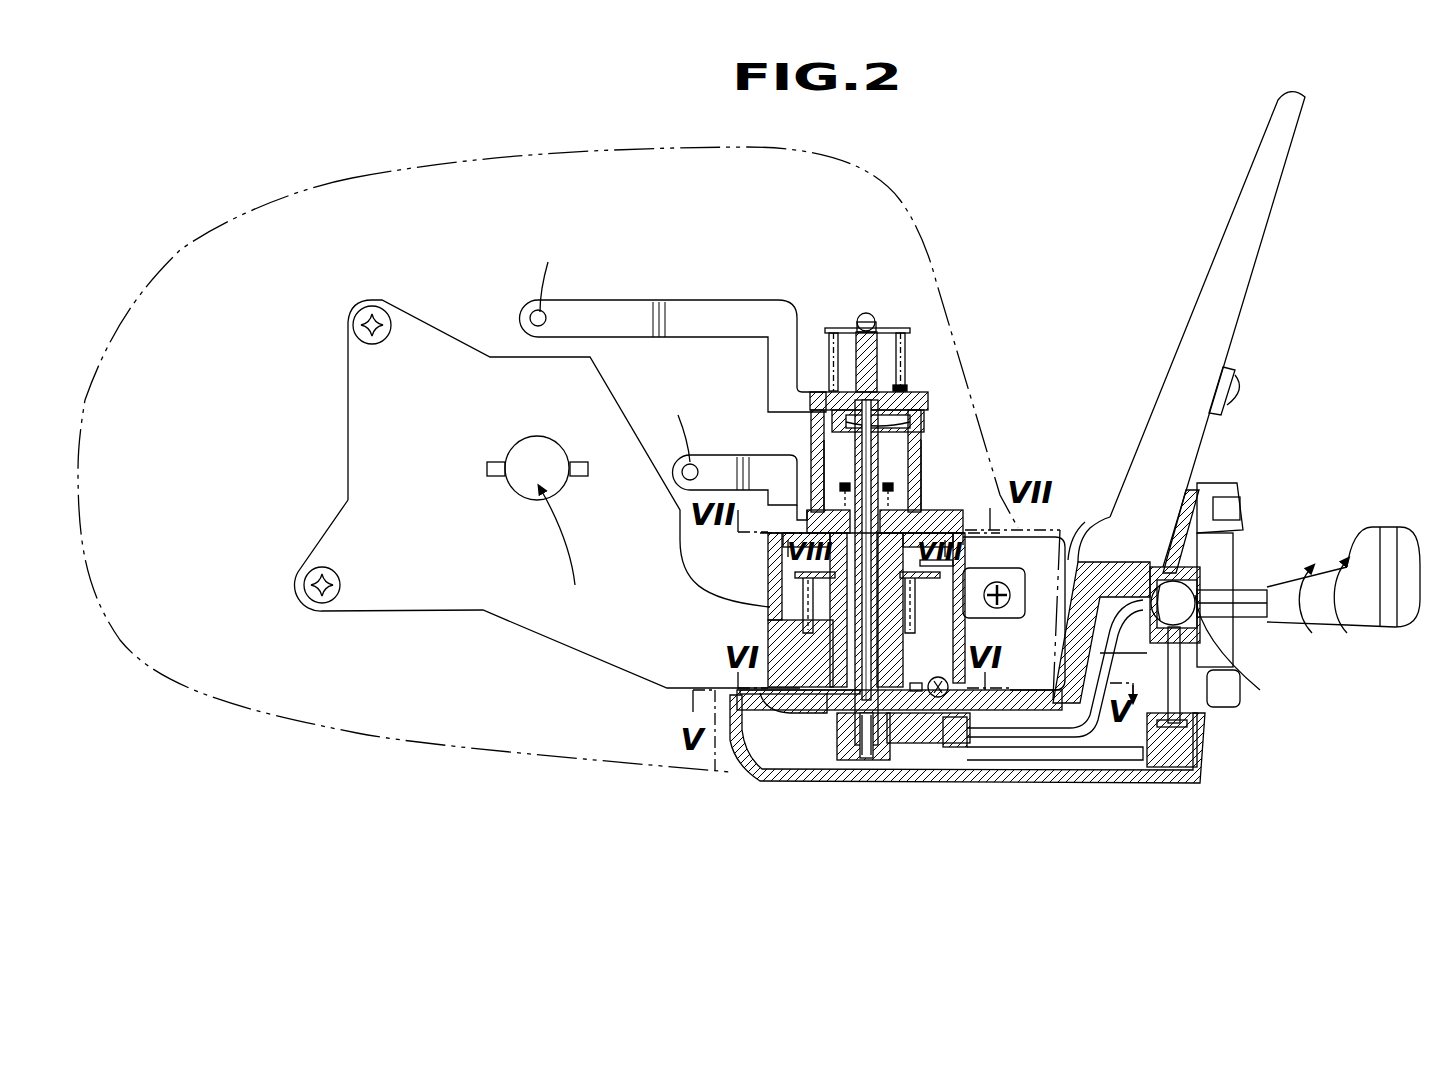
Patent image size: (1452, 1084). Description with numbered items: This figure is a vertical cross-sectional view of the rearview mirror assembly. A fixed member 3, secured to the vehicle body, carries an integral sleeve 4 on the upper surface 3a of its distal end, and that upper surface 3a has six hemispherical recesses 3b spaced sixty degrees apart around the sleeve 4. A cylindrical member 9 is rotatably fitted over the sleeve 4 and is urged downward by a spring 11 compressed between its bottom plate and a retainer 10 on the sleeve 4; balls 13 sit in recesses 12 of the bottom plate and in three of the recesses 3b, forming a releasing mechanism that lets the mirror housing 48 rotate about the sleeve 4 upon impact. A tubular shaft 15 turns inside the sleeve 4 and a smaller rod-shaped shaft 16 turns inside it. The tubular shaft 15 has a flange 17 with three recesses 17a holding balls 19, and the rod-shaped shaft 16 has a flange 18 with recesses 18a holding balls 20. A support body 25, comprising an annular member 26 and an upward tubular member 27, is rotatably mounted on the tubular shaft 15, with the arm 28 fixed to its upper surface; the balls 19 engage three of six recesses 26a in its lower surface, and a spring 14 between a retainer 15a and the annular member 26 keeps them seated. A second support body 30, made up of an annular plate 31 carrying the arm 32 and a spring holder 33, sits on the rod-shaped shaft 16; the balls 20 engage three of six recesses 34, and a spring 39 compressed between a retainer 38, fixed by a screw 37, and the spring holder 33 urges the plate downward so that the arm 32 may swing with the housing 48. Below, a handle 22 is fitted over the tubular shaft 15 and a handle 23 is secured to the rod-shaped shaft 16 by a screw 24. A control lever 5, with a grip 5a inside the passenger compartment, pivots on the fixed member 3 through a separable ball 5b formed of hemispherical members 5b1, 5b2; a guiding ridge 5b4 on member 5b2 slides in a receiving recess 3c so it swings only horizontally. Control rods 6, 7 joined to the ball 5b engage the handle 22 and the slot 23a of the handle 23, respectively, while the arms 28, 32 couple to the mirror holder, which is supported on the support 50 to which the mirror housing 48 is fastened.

The mirror housing 48 is at (400, 175).
The support 50 is at (435, 325).
The arm 32 is at (712, 300).
The arm 28 is at (730, 455).
The retainer 38 is at (830, 328).
The screw 37 is at (868, 313).
The recesses 34 is at (878, 380).
The annular plate 31 is at (830, 385).
The spring 39 is at (905, 360).
The spring holder 33 is at (907, 388).
The support body 30 is at (940, 394).
The balls 20 is at (900, 412).
The flange 18 is at (921, 450).
The recesses 18a is at (921, 428).
The tubular member 27 is at (921, 468).
The support body 25 is at (921, 488).
The annular member 26 is at (963, 520).
The recesses 26a is at (950, 540).
The cylindrical member 9 is at (1062, 561).
The spring 14 is at (866, 572).
The balls 19 is at (868, 510).
The retainer 15a is at (810, 500).
The flange 17 is at (840, 520).
The recesses 17a is at (795, 575).
The rod-shaped shaft 16 is at (768, 598).
The sleeve 4 is at (768, 630).
The tubular shaft 15 is at (768, 645).
The retainer 10 is at (1012, 585).
The spring 11 is at (953, 605).
The recesses 12 is at (940, 677).
The balls 13 is at (950, 688).
The fixed member 3 is at (1078, 560).
The receiving recess 3c is at (1078, 555).
The recesses 3b is at (812, 713).
The upper surface 3a is at (940, 760).
The screw 24 is at (862, 762).
The handle 22 is at (915, 745).
The handle 23 is at (1118, 762).
The slot 23a is at (1172, 767).
The control rod 6 is at (1072, 740).
The control lever 5 is at (1237, 570).
The grip 5a is at (1370, 527).
The separable ball 5b is at (1170, 580).
The hemispherical member 5b1 is at (1262, 690).
The guiding ridge 5b4 is at (1180, 690).
The hemispherical member 5b2 is at (1140, 495).
The control rod 7 is at (1205, 707).